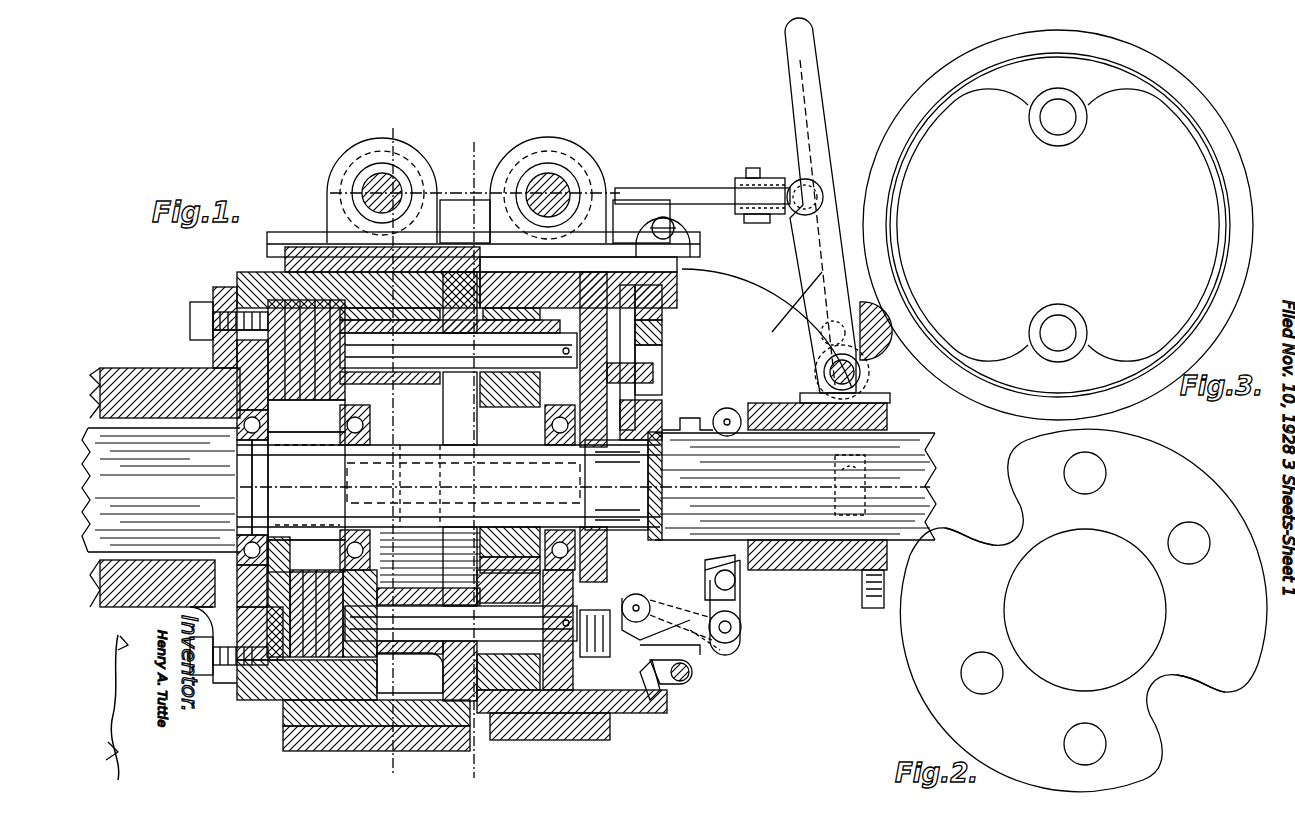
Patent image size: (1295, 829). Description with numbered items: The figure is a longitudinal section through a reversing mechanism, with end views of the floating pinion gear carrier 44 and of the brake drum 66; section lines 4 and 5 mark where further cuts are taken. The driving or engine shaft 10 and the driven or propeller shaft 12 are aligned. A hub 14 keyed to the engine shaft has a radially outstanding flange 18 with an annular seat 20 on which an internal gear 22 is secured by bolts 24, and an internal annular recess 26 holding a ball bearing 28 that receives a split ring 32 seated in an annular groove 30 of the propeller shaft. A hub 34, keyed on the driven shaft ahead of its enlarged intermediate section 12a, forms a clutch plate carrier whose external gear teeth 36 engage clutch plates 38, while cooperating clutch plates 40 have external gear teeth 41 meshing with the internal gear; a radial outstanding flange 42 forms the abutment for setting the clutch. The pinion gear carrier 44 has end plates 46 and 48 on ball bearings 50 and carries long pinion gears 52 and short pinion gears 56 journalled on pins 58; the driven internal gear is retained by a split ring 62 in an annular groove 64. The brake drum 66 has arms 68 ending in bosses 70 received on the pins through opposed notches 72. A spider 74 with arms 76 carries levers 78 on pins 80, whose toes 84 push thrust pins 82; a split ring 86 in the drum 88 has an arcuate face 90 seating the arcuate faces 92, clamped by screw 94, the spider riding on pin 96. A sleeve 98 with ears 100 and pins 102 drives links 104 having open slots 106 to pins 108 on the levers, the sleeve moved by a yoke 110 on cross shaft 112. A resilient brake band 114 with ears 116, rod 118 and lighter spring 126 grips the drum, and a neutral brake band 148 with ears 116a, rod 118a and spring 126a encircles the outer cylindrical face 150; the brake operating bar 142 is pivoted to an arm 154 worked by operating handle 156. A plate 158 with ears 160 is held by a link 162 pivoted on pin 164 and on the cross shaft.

In FIG. 1, the section line 4 is at (387, 777).
In FIG. 1, the section line 5 is at (475, 457).
In FIG. 1, the driving or engine shaft 10 is at (161, 490).
In FIG. 1, the driven or propeller shaft 12 is at (915, 480).
In FIG. 1, the enlarged intermediate section 12a is at (412, 445).
In FIG. 1, the hub 14 is at (120, 380).
In FIG. 1, the radially outstanding flange 18 is at (225, 288).
In FIG. 1, the annular seat 20 is at (228, 680).
In FIG. 1, the internal gear 22 is at (266, 700).
In FIG. 1, the bolts 24 is at (190, 318).
In FIG. 1, the internal annular recess 26 is at (240, 380).
In FIG. 1, the ball bearing 28 is at (240, 440).
In FIG. 1, the annular groove 30 is at (240, 478).
In FIG. 1, the two part or split ring 32 is at (240, 520).
In FIG. 1, the hub 34 is at (345, 465).
In FIG. 1, the external gear teeth 36 is at (300, 440).
In FIG. 1, the clutch plates 38 is at (350, 393).
In FIG. 1, the cooperating clutch plates 40 is at (240, 580).
In FIG. 1, the external gear teeth 41 is at (280, 275).
In FIG. 1, the radial outstanding flange 42 is at (215, 345).
In FIG. 1, the pinion gear carrier 44 is at (440, 392).
In FIG. 2, the pinion gear carrier 44 is at (1120, 530).
In FIG. 1, the end plate 46 is at (663, 300).
In FIG. 1, the end plate 48 is at (508, 250).
In FIG. 2, the end plate 48 is at (1190, 480).
In FIG. 1, the ball bearings 50 is at (365, 428).
In FIG. 1, the long pinion gears 52 is at (410, 520).
In FIG. 1, the short pinion gears 56 is at (500, 318).
In FIG. 1, the pins 58 is at (462, 270).
In FIG. 1, the two-part or split ring 62 is at (665, 515).
In FIG. 1, the annular groove 64 is at (640, 455).
In FIG. 1, the brake drum 66 is at (320, 247).
In FIG. 3, the brake drum 66 is at (1165, 65).
In FIG. 1, the radially inwardly extended arms or projections 68 is at (490, 270).
In FIG. 3, the radially inwardly extended arms or projections 68 is at (1050, 95).
In FIG. 1, the axially-extended bosses 70 is at (410, 318).
In FIG. 3, the axially-extended bosses 70 is at (1082, 122).
In FIG. 2, the opposed notches 72 is at (992, 540).
In FIG. 1, the spider 74 is at (672, 570).
In FIG. 1, the spaced outstanding arms 76 is at (690, 652).
In FIG. 1, the levers 78 is at (720, 648).
In FIG. 1, the pins 80 is at (650, 605).
In FIG. 1, the thrust pins 82 is at (578, 690).
In FIG. 1, the toes 84 is at (618, 657).
In FIG. 1, the split ring 86 is at (665, 318).
In FIG. 1, the cylindrical extension or drum 88 is at (665, 280).
In FIG. 1, the front arcuate face 90 is at (665, 335).
In FIG. 1, the arcuate faces 92 is at (670, 686).
In FIG. 1, the clamping screw 94 is at (692, 676).
In FIG. 1, the pin 96 is at (660, 400).
In FIG. 1, the sleeve 98 is at (830, 572).
In FIG. 1, the spaced outstanding ears 100 is at (745, 580).
In FIG. 1, the pins 102 is at (735, 600).
In FIG. 1, the links 104 is at (742, 615).
In FIG. 1, the open slots 106 is at (716, 578).
In FIG. 1, the pins 108 is at (742, 630).
In FIG. 1, the yoke 110 is at (838, 462).
In FIG. 1, the transversely extended or cross shaft 112 is at (828, 378).
In FIG. 1, the resilient brake band 114 is at (320, 751).
In FIG. 1, the spaced upstanding ears 116 is at (352, 182).
In FIG. 1, the confronting ears 116a is at (585, 150).
In FIG. 1, the rod 118 is at (395, 175).
In FIG. 1, the rod 118a is at (575, 195).
In FIG. 1, the lighter spring 126 is at (440, 190).
In FIG. 1, the spring 126a is at (548, 160).
In FIG. 1, the brake operating bar 142 is at (712, 188).
In FIG. 1, the neutral brake band 148 is at (552, 740).
In FIG. 1, the outer cylindrical face 150 is at (655, 178).
In FIG. 1, the arm 154 is at (767, 328).
In FIG. 1, the operating handle 156 is at (820, 98).
In FIG. 1, the plate 158 is at (635, 200).
In FIG. 1, the circumferentially extended ears 160 is at (690, 250).
In FIG. 1, the link 162 is at (782, 313).
In FIG. 1, the pin 164 is at (668, 222).